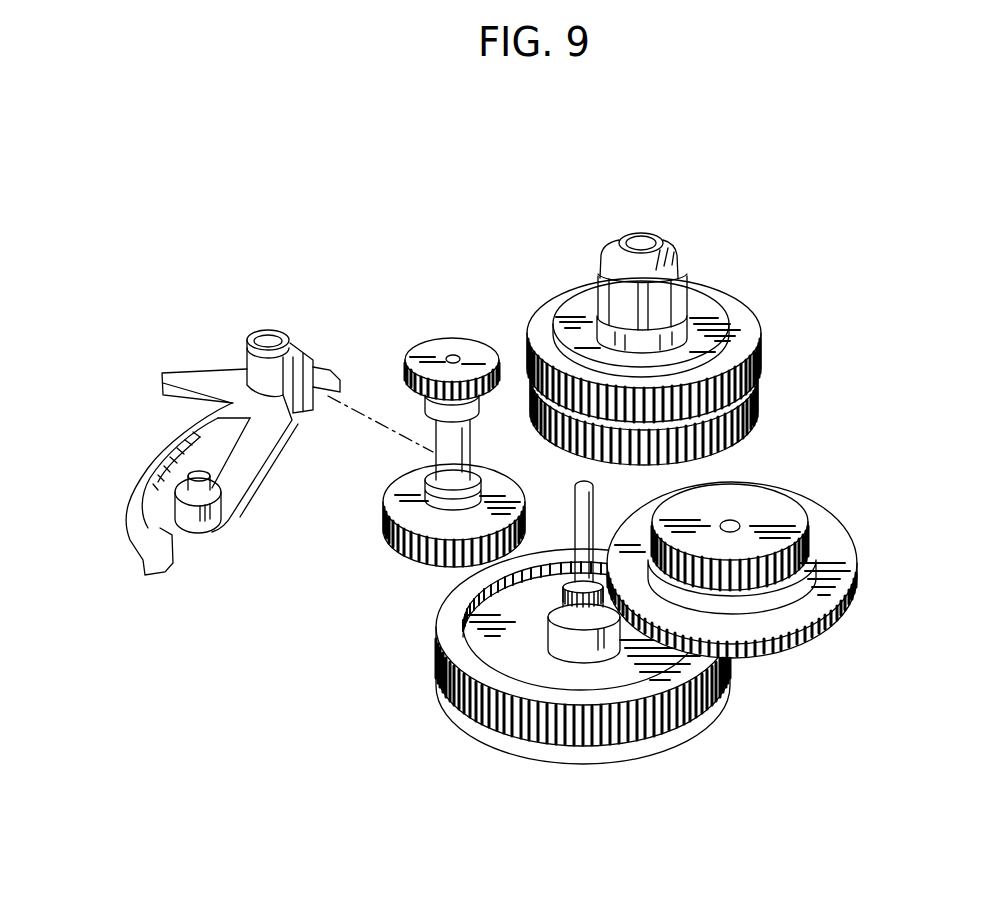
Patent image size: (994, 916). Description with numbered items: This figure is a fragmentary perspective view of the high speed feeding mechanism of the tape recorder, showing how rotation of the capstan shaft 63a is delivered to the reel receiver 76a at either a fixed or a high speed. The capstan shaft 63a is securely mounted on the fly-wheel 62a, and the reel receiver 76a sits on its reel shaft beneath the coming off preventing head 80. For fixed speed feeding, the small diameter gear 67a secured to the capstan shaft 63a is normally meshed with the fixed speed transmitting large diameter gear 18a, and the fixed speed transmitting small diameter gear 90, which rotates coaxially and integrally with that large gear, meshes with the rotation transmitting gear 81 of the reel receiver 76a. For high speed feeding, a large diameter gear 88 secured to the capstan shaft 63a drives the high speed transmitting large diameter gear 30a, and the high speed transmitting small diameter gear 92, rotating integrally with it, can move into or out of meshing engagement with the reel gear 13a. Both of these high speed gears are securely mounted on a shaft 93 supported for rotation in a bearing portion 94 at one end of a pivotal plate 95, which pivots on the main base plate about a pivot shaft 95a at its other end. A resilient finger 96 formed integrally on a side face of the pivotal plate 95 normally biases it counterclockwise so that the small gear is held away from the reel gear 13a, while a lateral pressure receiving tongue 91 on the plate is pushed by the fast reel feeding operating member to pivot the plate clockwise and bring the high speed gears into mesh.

The coming off preventing head 80 is at (638, 234).
The reel receiver 76a is at (680, 245).
The reel gear 13a is at (742, 330).
The rotation transmitting gear 81 is at (760, 404).
The fixed speed transmitting small diameter gear 90 is at (783, 512).
The fixed speed transmitting large diameter gear 18a is at (800, 648).
The capstan shaft 63a is at (596, 497).
The small diameter gear 67a is at (552, 626).
The fly-wheel 62a is at (660, 735).
The large diameter gear 88 is at (447, 706).
The high speed transmitting large diameter gear 30a is at (406, 552).
The high speed transmitting small diameter gear 92 is at (452, 338).
The shaft 93 is at (474, 442).
The bearing portion 94 is at (269, 330).
The pressure receiving tongue 91 is at (160, 375).
The pivotal plate 95 is at (258, 447).
The pivot shaft 95a is at (213, 492).
The resilient finger 96 is at (122, 490).